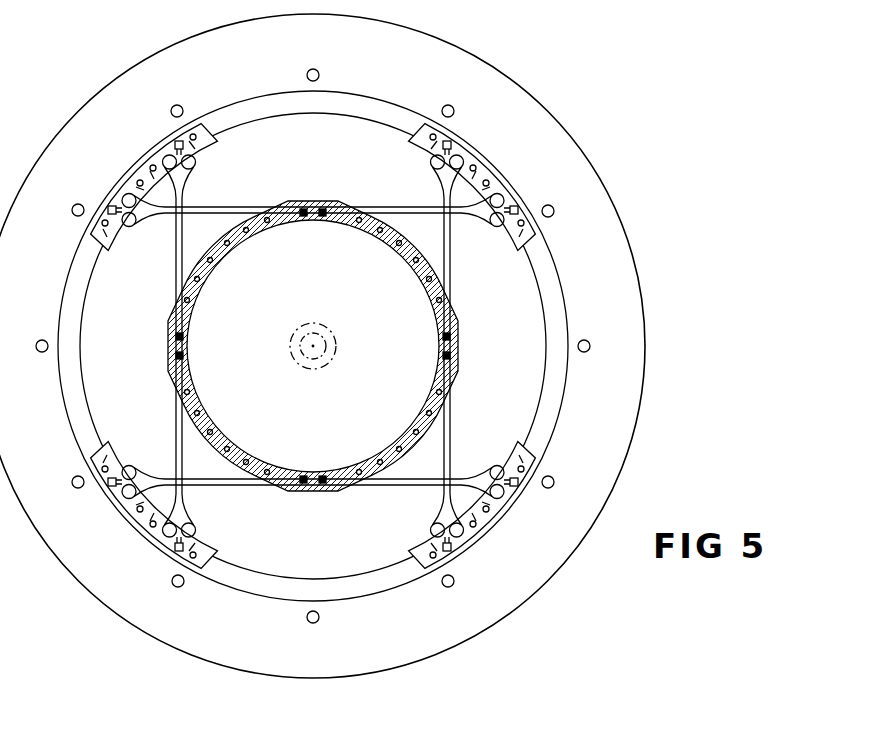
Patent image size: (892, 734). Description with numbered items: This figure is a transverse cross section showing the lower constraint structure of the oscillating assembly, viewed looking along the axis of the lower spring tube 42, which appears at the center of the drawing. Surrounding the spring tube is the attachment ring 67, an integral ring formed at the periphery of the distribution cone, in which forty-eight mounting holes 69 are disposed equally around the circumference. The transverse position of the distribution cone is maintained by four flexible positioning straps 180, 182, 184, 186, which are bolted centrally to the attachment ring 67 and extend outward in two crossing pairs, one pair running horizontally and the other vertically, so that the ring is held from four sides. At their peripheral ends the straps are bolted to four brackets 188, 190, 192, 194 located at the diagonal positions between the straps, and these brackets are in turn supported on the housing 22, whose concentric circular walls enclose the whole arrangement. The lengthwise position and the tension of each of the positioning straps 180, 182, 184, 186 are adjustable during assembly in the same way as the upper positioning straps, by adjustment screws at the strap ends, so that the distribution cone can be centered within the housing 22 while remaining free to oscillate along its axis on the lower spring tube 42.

The housing 22 is at (628, 239).
The lower spring tube 42 is at (330, 326).
The attachment ring 67 is at (211, 421).
The mounting holes 69 is at (410, 436).
The flexible positioning strap 180 is at (226, 486).
The flexible positioning strap 182 is at (170, 270).
The flexible positioning strap 184 is at (228, 206).
The flexible positioning strap 186 is at (452, 262).
The bracket 188 is at (221, 552).
The bracket 190 is at (220, 143).
The bracket 192 is at (407, 145).
The bracket 194 is at (406, 551).